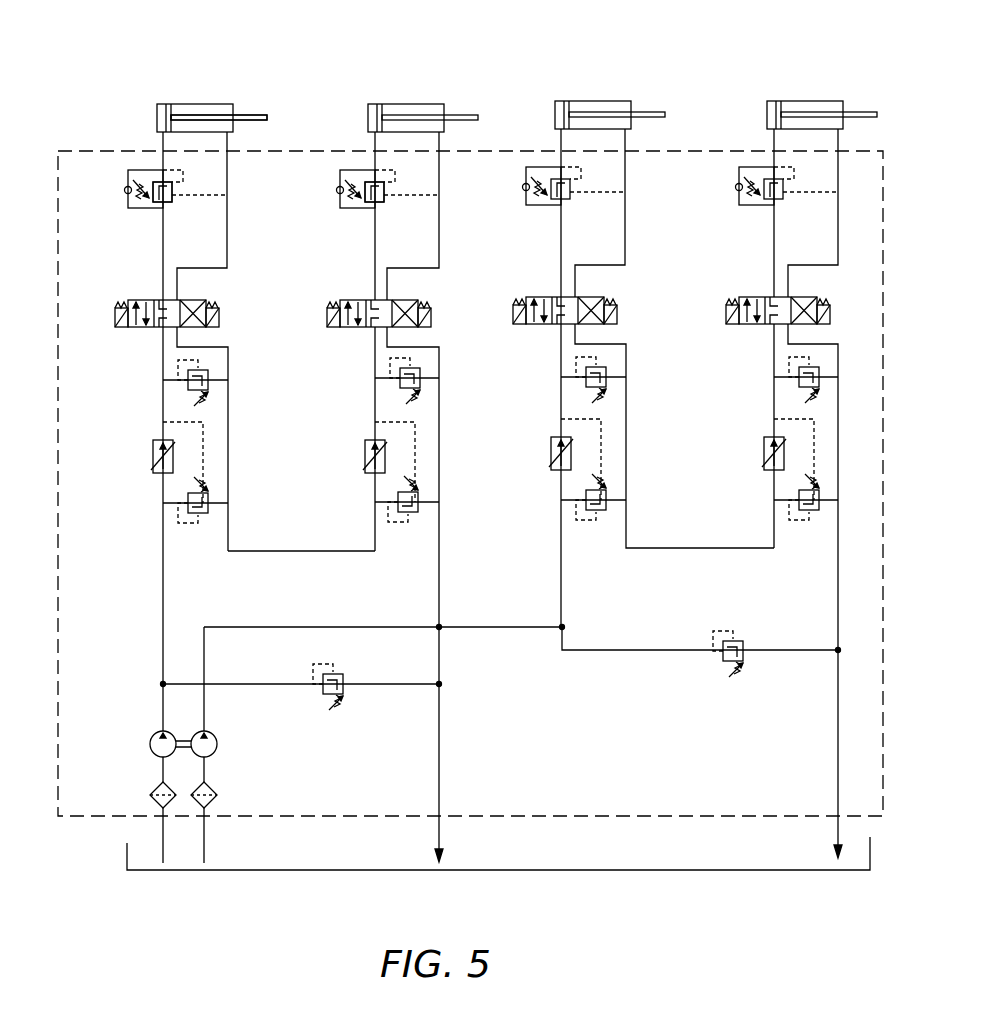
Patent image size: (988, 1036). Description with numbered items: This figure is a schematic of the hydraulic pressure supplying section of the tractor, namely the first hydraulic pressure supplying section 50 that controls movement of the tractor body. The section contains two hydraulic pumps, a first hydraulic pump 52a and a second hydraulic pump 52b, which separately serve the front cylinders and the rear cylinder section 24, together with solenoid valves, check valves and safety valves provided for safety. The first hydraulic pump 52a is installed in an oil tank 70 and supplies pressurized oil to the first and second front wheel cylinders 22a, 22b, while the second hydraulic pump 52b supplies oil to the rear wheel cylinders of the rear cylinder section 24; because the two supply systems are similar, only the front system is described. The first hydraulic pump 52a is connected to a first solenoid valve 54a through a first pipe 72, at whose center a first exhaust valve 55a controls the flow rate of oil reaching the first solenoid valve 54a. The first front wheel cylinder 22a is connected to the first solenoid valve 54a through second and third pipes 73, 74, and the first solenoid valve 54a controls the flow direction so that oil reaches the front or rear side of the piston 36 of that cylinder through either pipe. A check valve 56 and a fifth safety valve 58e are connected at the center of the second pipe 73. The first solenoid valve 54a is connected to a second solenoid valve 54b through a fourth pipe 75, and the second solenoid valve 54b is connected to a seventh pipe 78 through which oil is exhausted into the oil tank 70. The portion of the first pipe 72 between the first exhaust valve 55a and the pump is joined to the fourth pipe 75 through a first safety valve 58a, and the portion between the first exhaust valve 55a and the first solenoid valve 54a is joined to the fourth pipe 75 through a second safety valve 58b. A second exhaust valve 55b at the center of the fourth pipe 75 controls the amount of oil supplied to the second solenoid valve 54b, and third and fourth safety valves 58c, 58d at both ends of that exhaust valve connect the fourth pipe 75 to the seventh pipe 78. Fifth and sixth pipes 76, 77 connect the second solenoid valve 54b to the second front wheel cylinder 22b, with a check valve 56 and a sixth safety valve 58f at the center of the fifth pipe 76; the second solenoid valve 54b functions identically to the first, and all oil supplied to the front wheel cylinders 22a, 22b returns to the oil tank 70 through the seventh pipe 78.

The first front wheel cylinder 22a is at (200, 110).
The second front wheel cylinder 22b is at (412, 107).
The rear cylinder section 24 is at (597, 108).
The piston 36 is at (262, 110).
The first hydraulic pressure supplying section 50 is at (78, 182).
The first hydraulic pump 52a is at (150, 741).
The second hydraulic pump 52b is at (217, 745).
The first solenoid valve 54a is at (143, 327).
The second solenoid valve 54b is at (360, 327).
The first exhaust valve 55a is at (153, 457).
The second exhaust valve 55b is at (365, 447).
The check valve 56 is at (128, 195).
The first safety valve 58a is at (198, 513).
The second safety valve 58b is at (208, 380).
The third safety valve 58c is at (414, 512).
The fourth safety valve 58d is at (420, 383).
The fifth safety valve 58e is at (168, 203).
The sixth safety valve 58f is at (380, 198).
The oil tank 70 is at (125, 855).
The first pipe 72 is at (163, 582).
The second pipe 73 is at (165, 245).
The third pipe 74 is at (227, 248).
The fourth pipe 75 is at (228, 460).
The fifth pipe 76 is at (375, 262).
The sixth pipe 77 is at (440, 248).
The seventh pipe 78 is at (438, 578).